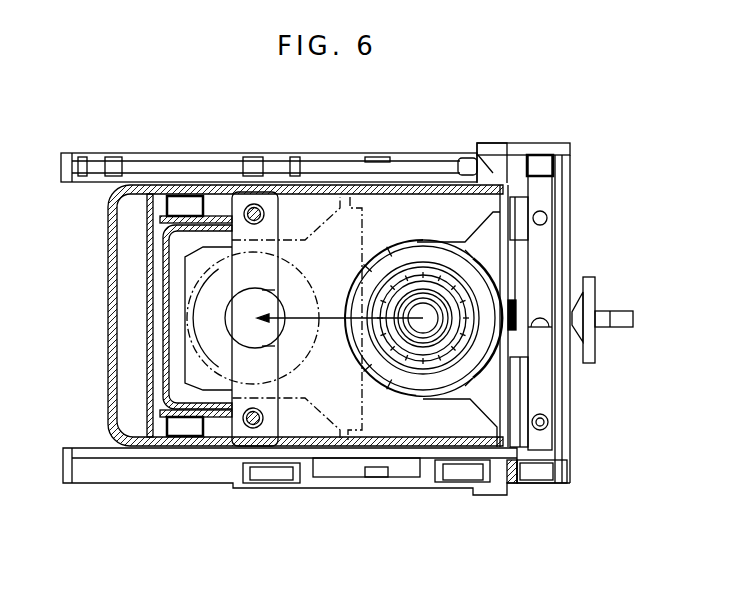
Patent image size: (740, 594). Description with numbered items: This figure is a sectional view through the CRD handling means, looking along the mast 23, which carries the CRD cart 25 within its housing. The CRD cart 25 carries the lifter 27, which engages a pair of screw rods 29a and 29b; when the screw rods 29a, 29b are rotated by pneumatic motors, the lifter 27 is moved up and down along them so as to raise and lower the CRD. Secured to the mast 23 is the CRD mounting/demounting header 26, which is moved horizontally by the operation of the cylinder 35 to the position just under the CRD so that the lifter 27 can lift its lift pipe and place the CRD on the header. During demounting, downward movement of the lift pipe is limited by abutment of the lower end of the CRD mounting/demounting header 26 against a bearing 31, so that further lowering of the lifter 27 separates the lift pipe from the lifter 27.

The mast 23 is at (108, 347).
The CRD cart 25 is at (165, 272).
The CRD mounting/demounting header 26 is at (425, 283).
The lifter 27 is at (197, 375).
The screw rod 29a is at (256, 208).
The screw rod 29b is at (250, 426).
The bearing 31 is at (435, 400).
The cylinder 35 is at (180, 158).